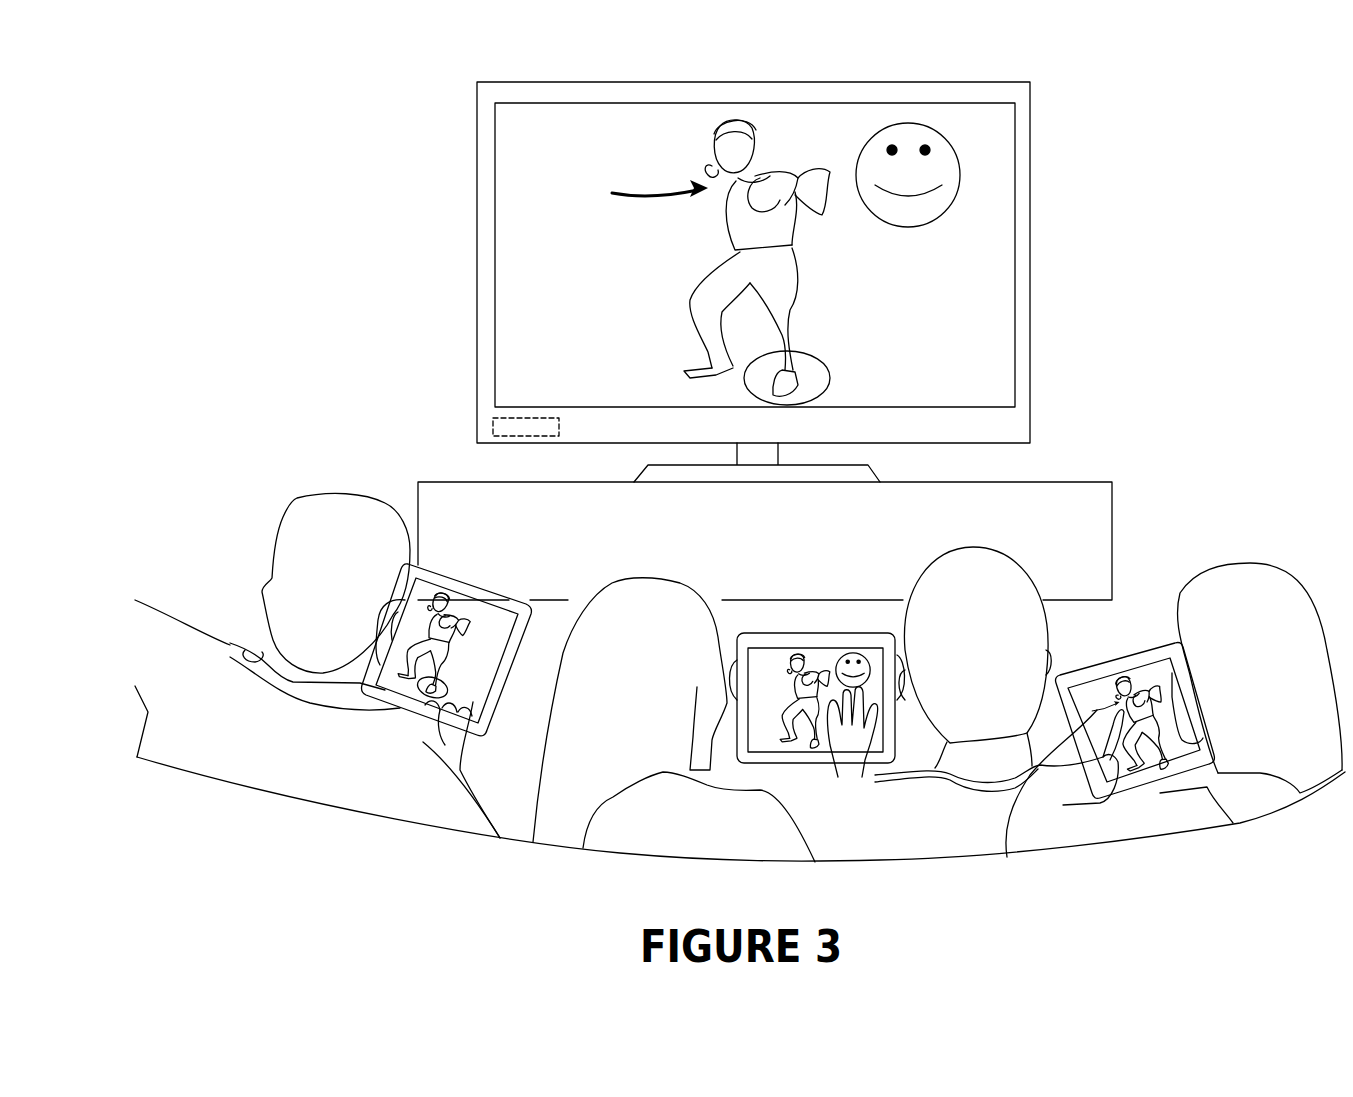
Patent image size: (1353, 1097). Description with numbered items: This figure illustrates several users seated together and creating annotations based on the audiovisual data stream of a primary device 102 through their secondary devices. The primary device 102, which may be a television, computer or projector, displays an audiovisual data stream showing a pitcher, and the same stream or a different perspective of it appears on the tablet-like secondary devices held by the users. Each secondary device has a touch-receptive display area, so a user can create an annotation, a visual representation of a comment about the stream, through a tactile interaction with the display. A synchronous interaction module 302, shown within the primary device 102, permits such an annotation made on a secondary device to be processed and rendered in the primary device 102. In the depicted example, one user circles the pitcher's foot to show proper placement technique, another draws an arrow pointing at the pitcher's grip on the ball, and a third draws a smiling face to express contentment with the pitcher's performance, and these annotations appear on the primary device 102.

The primary device 102 is at (1020, 268).
The synchronous interaction module 302 is at (500, 422).